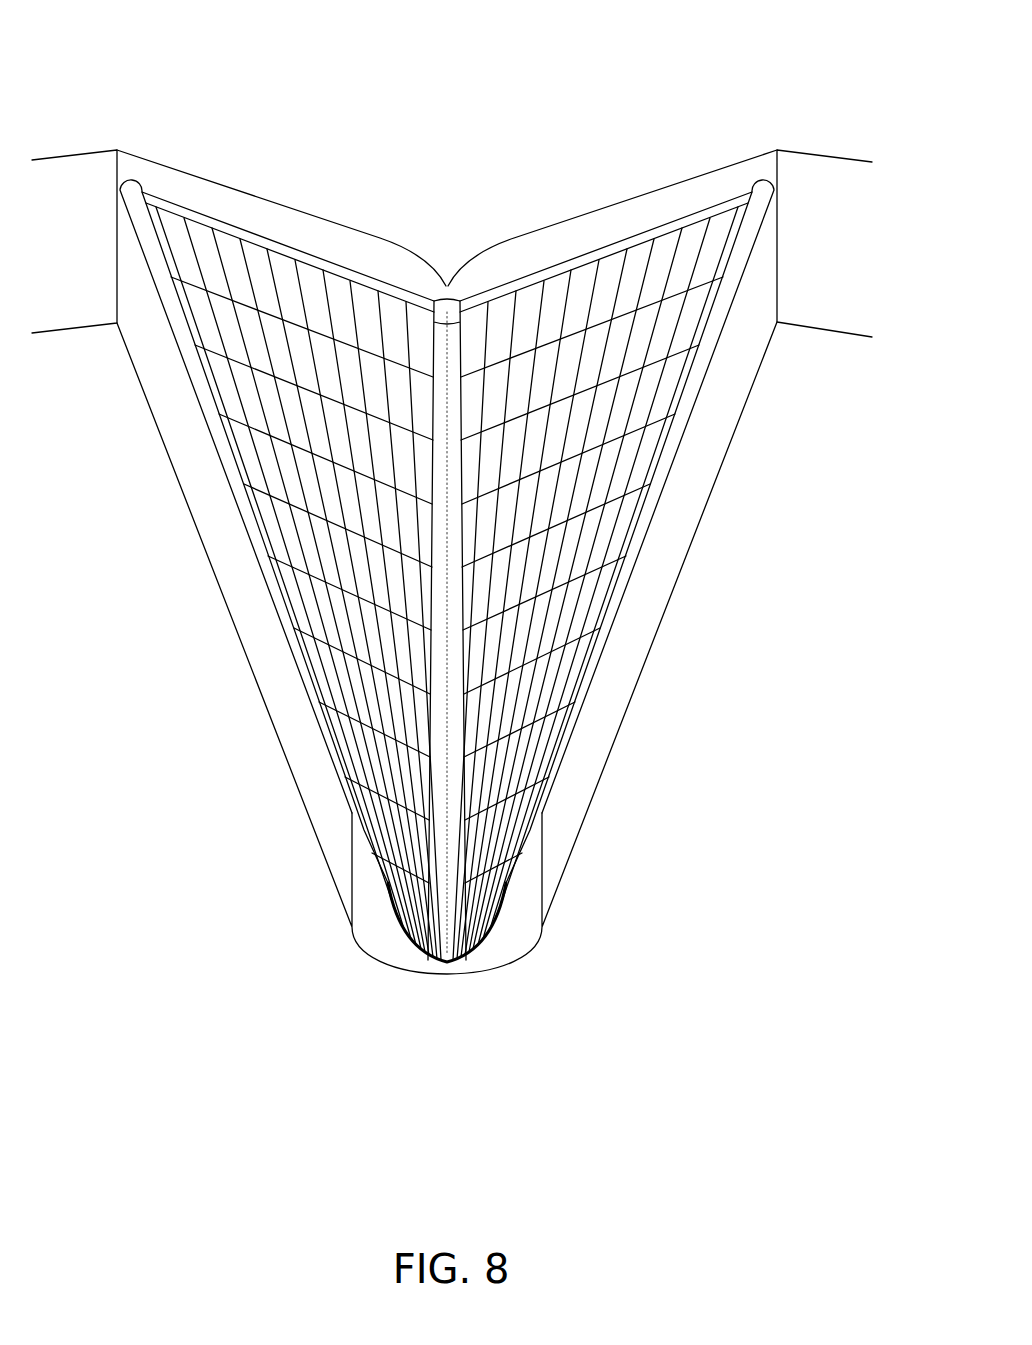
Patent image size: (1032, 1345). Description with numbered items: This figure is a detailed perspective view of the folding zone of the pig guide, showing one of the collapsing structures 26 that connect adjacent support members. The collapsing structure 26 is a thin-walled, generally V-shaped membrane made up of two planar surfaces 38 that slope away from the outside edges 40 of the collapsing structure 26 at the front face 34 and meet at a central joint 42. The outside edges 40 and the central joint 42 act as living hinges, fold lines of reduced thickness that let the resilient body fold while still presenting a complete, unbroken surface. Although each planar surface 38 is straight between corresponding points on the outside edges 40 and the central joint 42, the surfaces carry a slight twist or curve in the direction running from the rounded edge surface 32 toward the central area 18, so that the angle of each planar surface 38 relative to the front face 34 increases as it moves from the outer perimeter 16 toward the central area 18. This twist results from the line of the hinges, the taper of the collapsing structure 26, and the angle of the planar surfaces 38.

The outer perimeter 16 is at (62, 172).
The central area 18 is at (458, 1038).
The collapsing structure 26 is at (302, 230).
The rounded edge surface 32 is at (827, 243).
The front face 34 is at (798, 152).
The planar surface 38 is at (331, 524).
The outside edge 40 is at (128, 173).
The central joint 42 is at (447, 284).